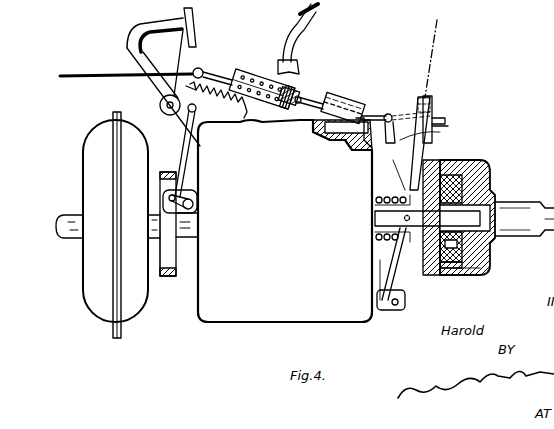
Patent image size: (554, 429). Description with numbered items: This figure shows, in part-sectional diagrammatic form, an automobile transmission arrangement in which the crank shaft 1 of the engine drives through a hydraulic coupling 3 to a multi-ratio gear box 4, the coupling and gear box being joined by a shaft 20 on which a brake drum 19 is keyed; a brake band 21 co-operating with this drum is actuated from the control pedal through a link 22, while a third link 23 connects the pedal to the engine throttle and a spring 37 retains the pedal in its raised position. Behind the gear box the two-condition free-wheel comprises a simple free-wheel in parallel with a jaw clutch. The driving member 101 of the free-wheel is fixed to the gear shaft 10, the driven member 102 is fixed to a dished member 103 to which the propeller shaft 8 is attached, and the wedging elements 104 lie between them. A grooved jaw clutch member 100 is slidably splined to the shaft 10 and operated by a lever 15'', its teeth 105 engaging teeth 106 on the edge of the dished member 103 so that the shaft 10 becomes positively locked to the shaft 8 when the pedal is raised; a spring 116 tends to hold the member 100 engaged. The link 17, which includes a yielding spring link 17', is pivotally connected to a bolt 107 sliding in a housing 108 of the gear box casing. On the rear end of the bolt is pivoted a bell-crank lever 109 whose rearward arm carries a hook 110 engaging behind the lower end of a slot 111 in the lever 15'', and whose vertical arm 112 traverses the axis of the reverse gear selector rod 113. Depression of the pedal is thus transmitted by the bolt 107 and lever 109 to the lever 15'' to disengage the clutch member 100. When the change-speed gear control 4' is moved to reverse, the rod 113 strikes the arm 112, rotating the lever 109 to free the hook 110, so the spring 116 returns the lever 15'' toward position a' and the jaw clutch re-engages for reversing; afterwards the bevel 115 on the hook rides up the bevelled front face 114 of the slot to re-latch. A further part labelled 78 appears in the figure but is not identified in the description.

The crank shaft 1 is at (56, 228).
The hydraulic coupling 3 is at (108, 322).
The gear box 4 is at (292, 228).
The change-speed gear control 4' is at (310, 39).
The propeller shaft 8 is at (546, 228).
The gear shaft 10 is at (380, 220).
The link 17 is at (212, 65).
The spring link 17' is at (265, 77).
The brake drum 19 is at (172, 250).
The shaft 20 is at (158, 262).
The brake band 21 is at (170, 186).
The link 22 is at (181, 140).
The third link 23 is at (95, 66).
The spring 37 is at (238, 118).
The pedal frame 78 is at (155, 65).
The jaw clutch member 100 is at (400, 276).
The driving member 101 is at (492, 198).
The driven member 102 is at (478, 275).
The dished member 103 is at (480, 166).
The free-wheel wedging elements 104 is at (465, 250).
The teeth 105 is at (425, 168).
The teeth 106 is at (450, 272).
The bolt 107 is at (310, 96).
The housing 108 is at (345, 100).
The bell-crank lever 109 is at (388, 114).
The hook 110 is at (436, 114).
The slot 111 is at (432, 108).
The vertical arm 112 is at (366, 148).
The reverse gear selector rod 113 is at (334, 142).
The bevelled front face 114 is at (420, 140).
The bevel 115 is at (448, 126).
The spring 116 is at (377, 245).
The jaw-clutch actuating lever 15'' is at (453, 131).
The position a' is at (439, 51).